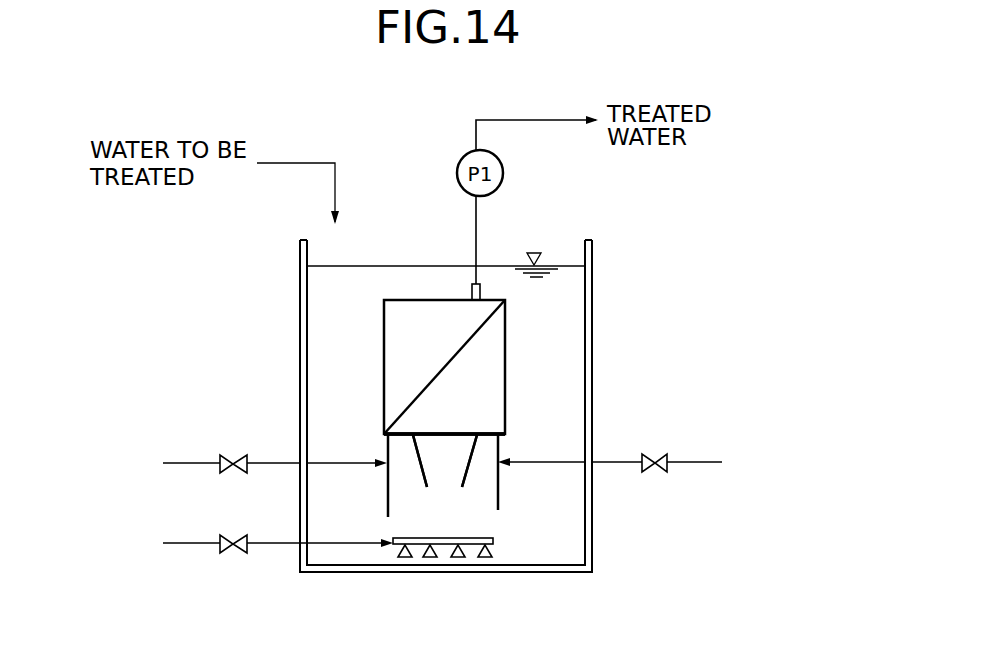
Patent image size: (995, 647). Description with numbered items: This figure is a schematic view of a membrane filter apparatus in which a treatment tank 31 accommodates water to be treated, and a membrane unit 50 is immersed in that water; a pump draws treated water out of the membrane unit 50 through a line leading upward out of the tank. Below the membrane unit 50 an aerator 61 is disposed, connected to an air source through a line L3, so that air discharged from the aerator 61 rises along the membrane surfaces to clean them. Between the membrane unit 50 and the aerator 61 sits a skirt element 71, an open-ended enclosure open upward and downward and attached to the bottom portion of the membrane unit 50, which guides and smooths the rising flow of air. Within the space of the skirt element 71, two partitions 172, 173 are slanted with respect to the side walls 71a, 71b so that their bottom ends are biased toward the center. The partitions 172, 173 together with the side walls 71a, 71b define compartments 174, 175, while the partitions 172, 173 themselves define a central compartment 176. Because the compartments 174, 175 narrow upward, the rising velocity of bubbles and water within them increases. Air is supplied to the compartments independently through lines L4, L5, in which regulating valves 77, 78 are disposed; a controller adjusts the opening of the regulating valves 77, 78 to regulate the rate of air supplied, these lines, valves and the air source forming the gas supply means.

The treatment tank 31 is at (593, 278).
The membrane unit 50 is at (505, 341).
The skirt element 71 is at (509, 447).
The side wall 71a is at (388, 479).
The side wall 71b is at (499, 481).
The regulating valve 77 is at (231, 455).
The regulating valve 78 is at (658, 455).
The partition 172 is at (390, 488).
The partition 173 is at (466, 473).
The compartment 174 is at (396, 452).
The compartment 175 is at (487, 444).
The compartment 176 is at (439, 444).
The aerator 61 is at (446, 554).
The line L3 is at (262, 546).
The line L4 is at (172, 461).
The line L5 is at (711, 460).